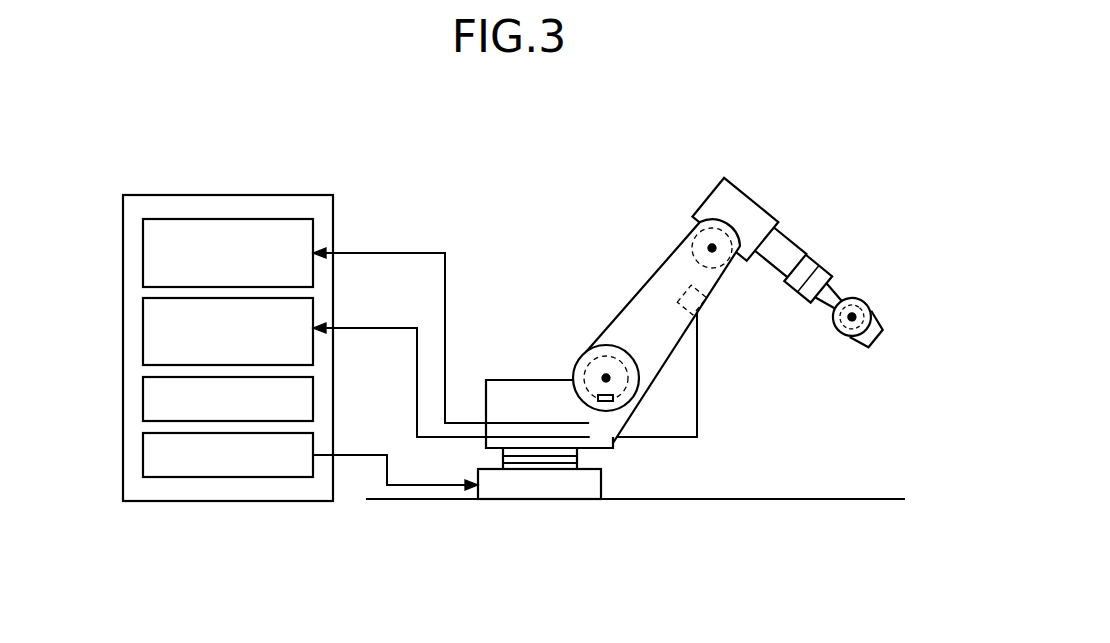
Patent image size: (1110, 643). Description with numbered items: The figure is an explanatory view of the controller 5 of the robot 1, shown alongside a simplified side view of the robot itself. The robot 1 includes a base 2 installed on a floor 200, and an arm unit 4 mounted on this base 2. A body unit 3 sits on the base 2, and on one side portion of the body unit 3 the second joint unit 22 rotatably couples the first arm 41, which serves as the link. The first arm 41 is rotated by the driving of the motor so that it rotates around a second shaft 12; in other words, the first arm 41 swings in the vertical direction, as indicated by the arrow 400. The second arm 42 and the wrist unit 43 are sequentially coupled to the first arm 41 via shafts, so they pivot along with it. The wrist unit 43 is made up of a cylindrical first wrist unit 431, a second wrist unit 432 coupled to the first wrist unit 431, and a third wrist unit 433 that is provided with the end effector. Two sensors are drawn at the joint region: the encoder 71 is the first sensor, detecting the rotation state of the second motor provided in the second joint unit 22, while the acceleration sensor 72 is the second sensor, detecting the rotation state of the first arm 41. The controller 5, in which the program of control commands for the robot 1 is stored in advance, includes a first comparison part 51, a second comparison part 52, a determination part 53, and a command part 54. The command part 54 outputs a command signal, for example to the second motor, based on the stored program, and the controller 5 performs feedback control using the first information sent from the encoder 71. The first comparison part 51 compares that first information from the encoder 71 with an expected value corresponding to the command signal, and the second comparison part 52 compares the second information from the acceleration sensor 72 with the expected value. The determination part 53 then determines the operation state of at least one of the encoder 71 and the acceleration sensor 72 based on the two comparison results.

The robot 1 is at (532, 232).
The base 2 is at (601, 485).
The body unit 3 is at (503, 380).
The arm unit 4 is at (655, 268).
The controller 5 is at (228, 195).
The second shaft 12 is at (606, 376).
The second joint unit 22 is at (628, 380).
The first arm 41 is at (684, 240).
The second arm 42 is at (750, 192).
The wrist unit 43 is at (970, 168).
The first comparison part 51 is at (143, 253).
The second comparison part 52 is at (143, 328).
The determination part 53 is at (143, 396).
The command part 54 is at (143, 455).
The encoder 71 is at (598, 394).
The acceleration sensor 72 is at (709, 290).
The floor 200 is at (806, 490).
The arrow 400 is at (560, 398).
The first wrist unit 431 is at (813, 262).
The second wrist unit 432 is at (826, 268).
The third wrist unit 433 is at (853, 300).